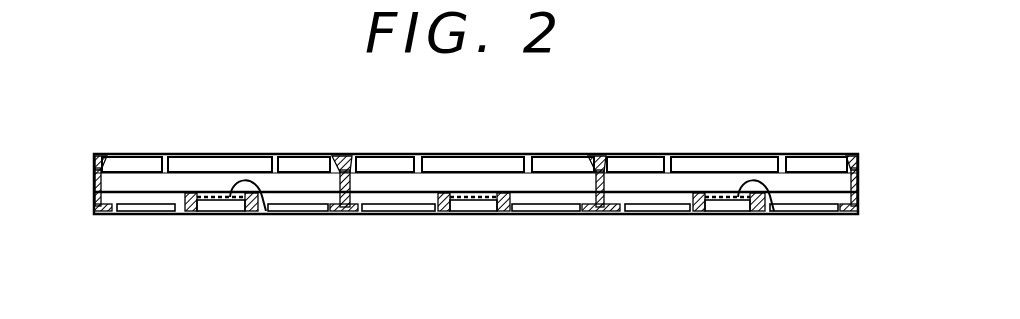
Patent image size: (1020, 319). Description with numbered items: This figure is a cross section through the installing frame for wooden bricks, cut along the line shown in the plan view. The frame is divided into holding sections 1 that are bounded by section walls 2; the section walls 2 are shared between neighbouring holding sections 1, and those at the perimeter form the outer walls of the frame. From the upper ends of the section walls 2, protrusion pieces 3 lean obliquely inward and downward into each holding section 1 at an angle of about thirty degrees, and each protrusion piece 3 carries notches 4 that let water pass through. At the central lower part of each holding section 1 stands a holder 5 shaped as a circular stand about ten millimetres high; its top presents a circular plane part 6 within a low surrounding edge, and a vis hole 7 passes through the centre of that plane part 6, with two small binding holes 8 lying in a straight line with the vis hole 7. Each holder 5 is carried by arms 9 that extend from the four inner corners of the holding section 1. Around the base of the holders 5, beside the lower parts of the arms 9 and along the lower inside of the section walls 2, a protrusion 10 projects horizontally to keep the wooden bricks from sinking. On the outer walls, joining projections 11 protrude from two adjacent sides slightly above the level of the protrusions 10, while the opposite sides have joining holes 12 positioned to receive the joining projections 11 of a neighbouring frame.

The holding section 1 is at (229, 155).
The section wall 2 is at (97, 168).
The protrusion piece 3 is at (384, 160).
The notch 4 is at (165, 155).
The holder 5 is at (220, 206).
The circular plane part 6 is at (262, 205).
The vis hole 7 is at (479, 196).
The binding hole 8 is at (712, 200).
The arm 9 is at (400, 203).
The protrusion for preventing sinking 10 is at (108, 214).
The joining projection 11 is at (858, 207).
The joining hole 12 is at (96, 200).